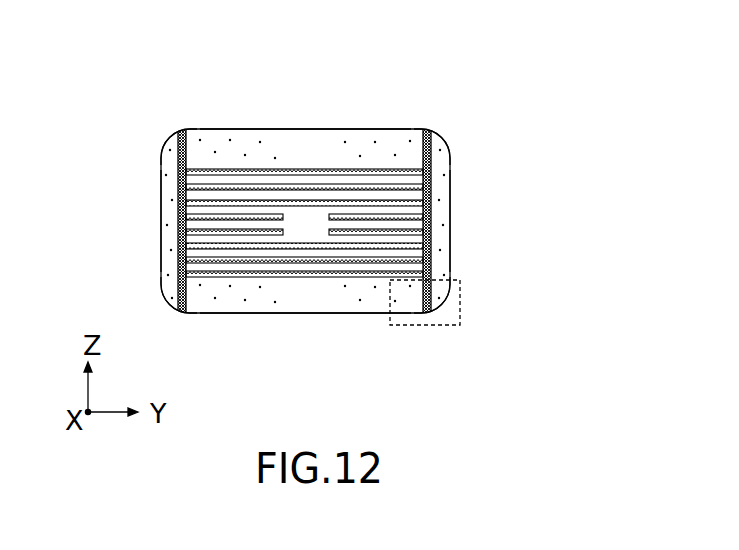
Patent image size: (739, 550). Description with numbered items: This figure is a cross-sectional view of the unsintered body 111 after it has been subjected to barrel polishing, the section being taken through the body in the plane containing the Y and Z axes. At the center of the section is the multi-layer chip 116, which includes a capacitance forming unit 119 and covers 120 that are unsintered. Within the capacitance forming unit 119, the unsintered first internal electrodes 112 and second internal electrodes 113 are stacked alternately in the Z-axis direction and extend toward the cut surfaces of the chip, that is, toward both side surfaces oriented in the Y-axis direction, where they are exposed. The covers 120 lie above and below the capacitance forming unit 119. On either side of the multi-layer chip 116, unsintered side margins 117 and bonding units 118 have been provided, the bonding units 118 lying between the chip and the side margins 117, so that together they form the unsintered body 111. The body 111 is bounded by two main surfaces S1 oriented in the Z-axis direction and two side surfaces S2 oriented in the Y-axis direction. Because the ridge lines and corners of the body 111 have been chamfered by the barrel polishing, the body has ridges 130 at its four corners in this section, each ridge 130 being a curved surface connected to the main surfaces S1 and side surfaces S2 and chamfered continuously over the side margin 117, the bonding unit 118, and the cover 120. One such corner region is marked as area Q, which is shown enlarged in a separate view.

The unsintered body 111 is at (455, 79).
The first internal electrode 112 is at (220, 257).
The second internal electrode 113 is at (345, 271).
The multi-layer chip 116 is at (310, 128).
The side margin 117 is at (173, 172).
The bonding unit 118 is at (182, 130).
The capacitance forming unit 119 is at (327, 234).
The cover 120 is at (327, 164).
The ridge 130 is at (168, 140).
The main surface S1 is at (227, 130).
The side surface S2 is at (161, 222).
The area Q is at (460, 298).